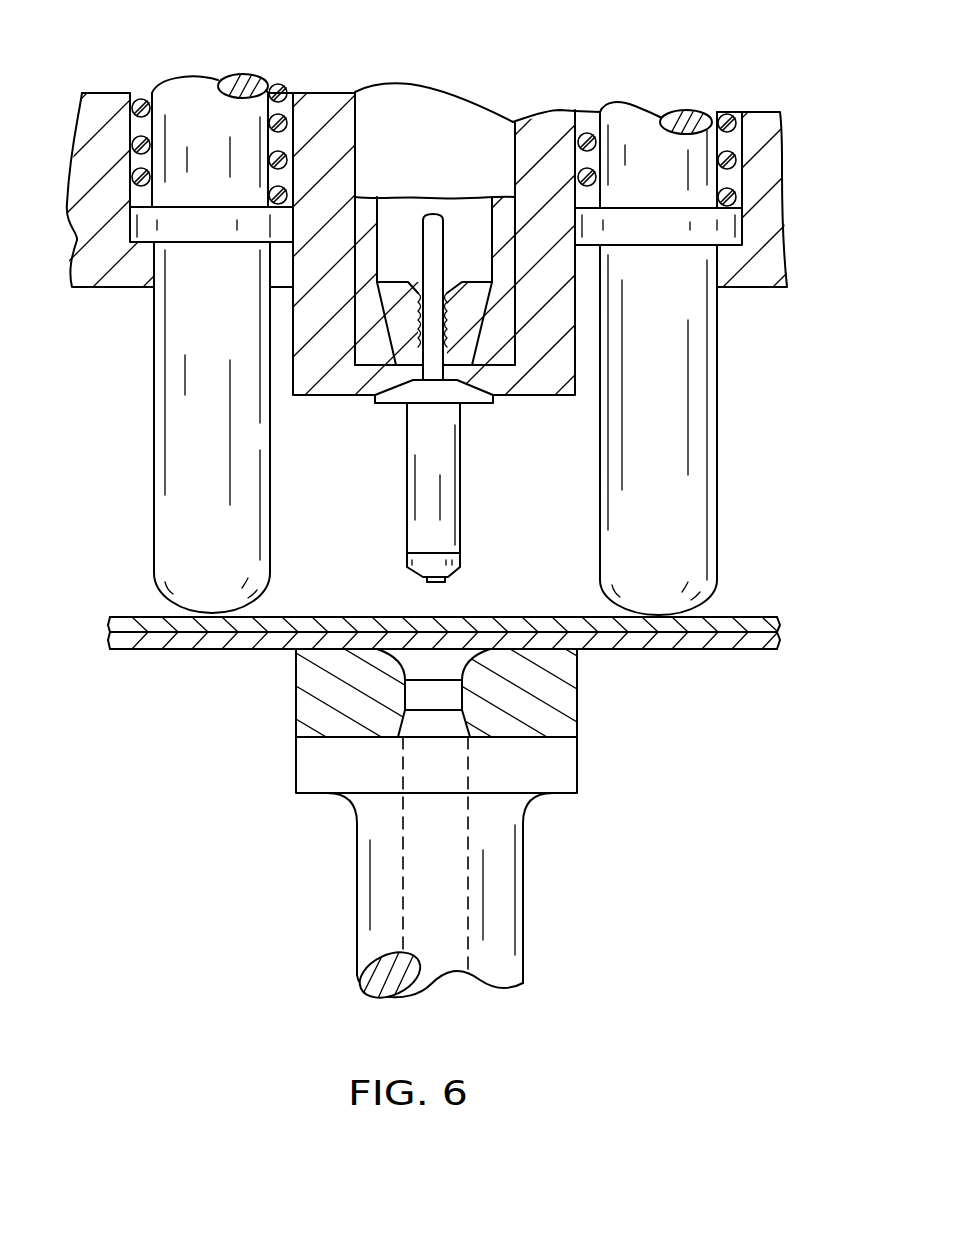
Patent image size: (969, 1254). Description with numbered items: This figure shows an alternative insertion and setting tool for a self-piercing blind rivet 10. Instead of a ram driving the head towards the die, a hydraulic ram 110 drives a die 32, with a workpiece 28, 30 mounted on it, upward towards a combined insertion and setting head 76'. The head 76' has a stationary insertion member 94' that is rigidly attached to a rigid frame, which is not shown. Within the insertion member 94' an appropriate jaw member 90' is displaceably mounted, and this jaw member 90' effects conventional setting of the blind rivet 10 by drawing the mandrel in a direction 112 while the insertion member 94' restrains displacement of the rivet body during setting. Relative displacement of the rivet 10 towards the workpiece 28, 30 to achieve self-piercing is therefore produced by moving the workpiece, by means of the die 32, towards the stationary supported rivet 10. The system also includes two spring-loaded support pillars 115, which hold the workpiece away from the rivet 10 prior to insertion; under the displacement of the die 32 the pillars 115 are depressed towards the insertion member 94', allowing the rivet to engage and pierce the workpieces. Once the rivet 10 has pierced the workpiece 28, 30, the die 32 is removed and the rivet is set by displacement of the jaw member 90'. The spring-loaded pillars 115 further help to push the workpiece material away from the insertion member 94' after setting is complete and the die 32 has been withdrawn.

The self-piercing blind rivet 10 is at (417, 527).
The workpiece 28 is at (703, 640).
The workpiece 30 is at (736, 628).
The die 32 is at (312, 697).
The hydraulic ram 110 is at (364, 876).
The direction 112 is at (463, 187).
The spring-loaded support pillars 115 is at (190, 468).
The combined insertion and setting head 76' is at (467, 330).
The jaw member 90' is at (423, 218).
The insertion member 94' is at (318, 330).